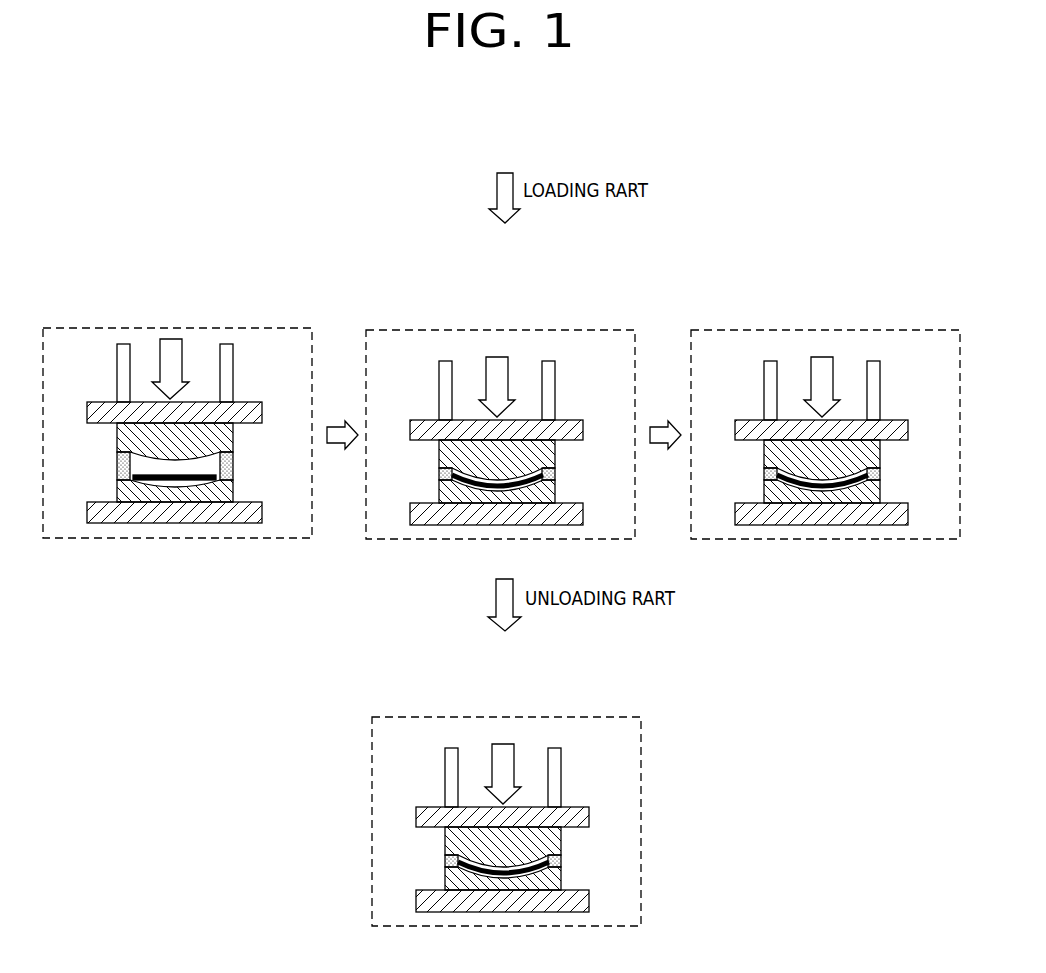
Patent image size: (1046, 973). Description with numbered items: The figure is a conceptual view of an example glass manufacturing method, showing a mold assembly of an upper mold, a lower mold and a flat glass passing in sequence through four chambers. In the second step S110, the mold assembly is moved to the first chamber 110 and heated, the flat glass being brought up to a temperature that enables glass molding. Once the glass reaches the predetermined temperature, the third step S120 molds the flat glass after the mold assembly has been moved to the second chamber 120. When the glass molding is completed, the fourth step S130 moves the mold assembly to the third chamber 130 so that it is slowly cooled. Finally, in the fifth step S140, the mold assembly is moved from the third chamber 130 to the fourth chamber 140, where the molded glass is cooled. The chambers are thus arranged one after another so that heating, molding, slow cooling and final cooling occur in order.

The first chamber 110 is at (207, 328).
The second chamber 120 is at (530, 330).
The third chamber 130 is at (855, 330).
The fourth chamber 140 is at (536, 717).
The second step S110 is at (80, 285).
The third step S120 is at (398, 297).
The fourth step S130 is at (723, 297).
The fifth step S140 is at (404, 684).